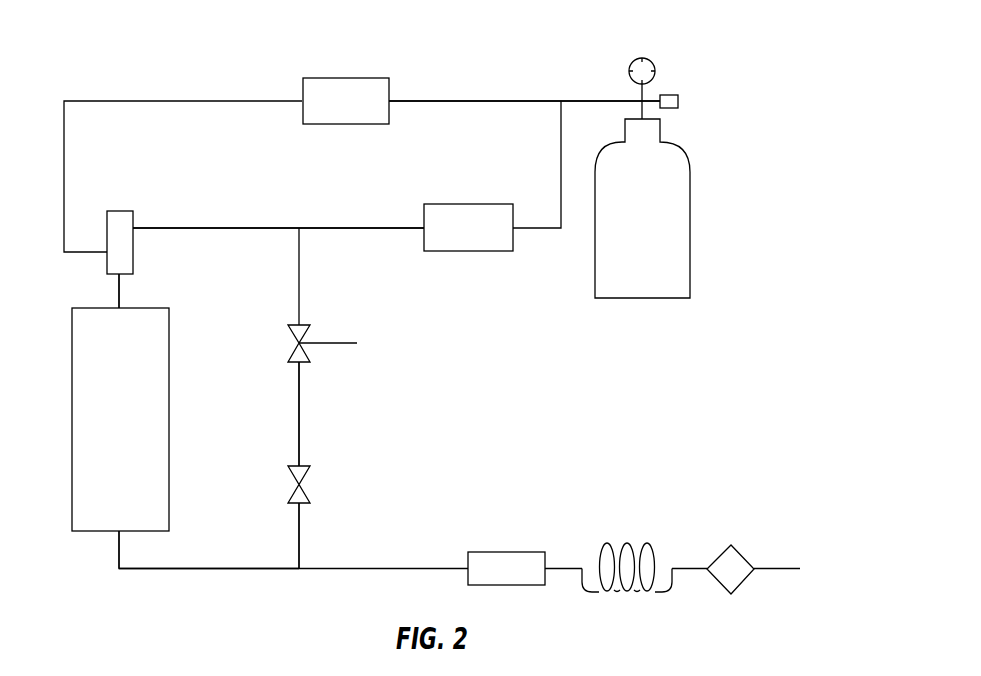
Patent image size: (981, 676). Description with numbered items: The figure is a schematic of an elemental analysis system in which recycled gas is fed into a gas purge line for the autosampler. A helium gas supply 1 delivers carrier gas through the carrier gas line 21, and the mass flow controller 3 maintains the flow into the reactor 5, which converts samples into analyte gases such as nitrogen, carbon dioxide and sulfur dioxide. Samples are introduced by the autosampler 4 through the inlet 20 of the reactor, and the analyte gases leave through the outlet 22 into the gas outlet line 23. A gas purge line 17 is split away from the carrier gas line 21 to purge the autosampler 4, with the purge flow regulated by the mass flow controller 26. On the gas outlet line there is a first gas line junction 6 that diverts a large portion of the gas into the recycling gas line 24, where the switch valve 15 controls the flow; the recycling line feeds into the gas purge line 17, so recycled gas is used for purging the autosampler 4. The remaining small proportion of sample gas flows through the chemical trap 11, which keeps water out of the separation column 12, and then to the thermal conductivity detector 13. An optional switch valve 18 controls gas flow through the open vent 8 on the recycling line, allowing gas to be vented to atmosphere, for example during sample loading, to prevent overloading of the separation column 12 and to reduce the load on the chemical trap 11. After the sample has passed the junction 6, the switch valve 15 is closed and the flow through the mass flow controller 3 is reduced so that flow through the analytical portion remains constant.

The helium gas supply 1 is at (690, 183).
The mass flow controller 3 is at (348, 78).
The autosampler 4 is at (118, 211).
The reactor 5 is at (170, 420).
The first gas line junction 6 is at (298, 570).
The open vent 8 is at (378, 356).
The chemical trap 11 is at (507, 585).
The separation column 12 is at (635, 592).
The thermal conductivity detector 13 is at (733, 594).
The switch valve 15 is at (302, 484).
The gas purge line 17 is at (205, 228).
The switch valve 18 is at (297, 342).
The inlet 20 is at (113, 301).
The carrier gas line 21 is at (465, 100).
The outlet 22 is at (116, 536).
The gas outlet line 23 is at (122, 571).
The recycling gas line 24 is at (302, 413).
The mass flow controller 26 is at (470, 204).